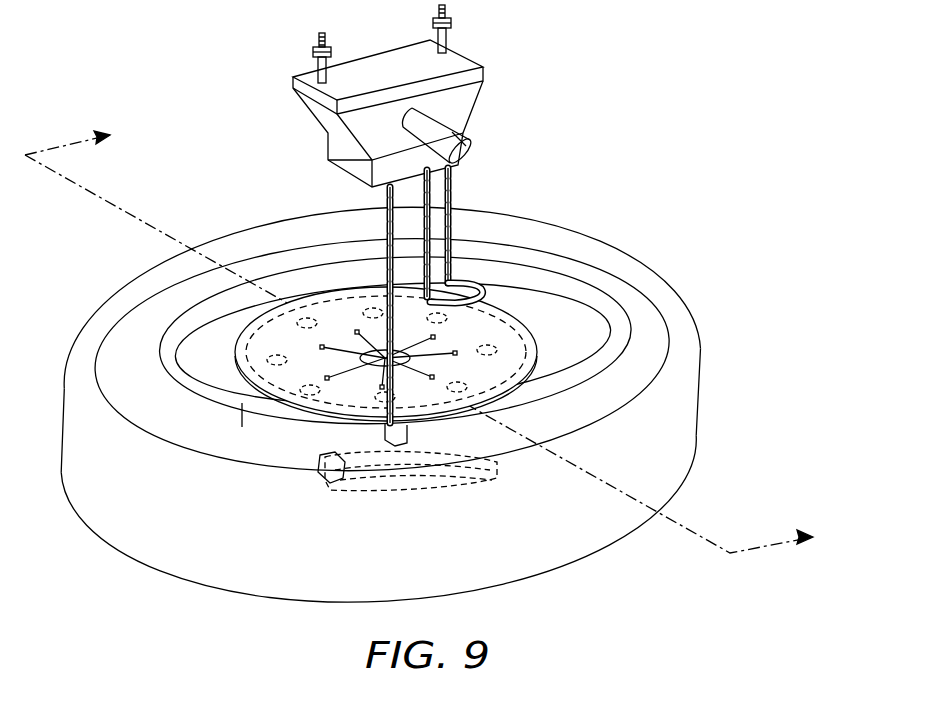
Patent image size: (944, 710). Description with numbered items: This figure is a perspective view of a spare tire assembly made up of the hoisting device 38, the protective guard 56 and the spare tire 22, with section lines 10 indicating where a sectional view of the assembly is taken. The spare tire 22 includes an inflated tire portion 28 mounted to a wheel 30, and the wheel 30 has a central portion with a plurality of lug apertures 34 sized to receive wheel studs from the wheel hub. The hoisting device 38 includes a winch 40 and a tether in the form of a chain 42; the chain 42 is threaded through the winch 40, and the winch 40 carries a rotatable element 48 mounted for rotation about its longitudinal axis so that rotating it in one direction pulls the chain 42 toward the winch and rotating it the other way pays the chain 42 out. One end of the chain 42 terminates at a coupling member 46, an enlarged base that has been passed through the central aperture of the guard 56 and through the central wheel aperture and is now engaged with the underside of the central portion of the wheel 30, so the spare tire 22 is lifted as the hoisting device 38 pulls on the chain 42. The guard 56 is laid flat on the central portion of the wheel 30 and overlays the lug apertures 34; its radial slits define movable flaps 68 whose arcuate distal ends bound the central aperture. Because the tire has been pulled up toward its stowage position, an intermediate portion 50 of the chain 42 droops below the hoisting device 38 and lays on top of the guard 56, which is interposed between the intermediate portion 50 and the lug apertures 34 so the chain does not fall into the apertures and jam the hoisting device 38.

The section lines 10 is at (435, 335).
The spare tire 22 is at (422, 390).
The inflated tire portion 28 is at (683, 438).
The wheel 30 is at (590, 382).
The lug apertures 34 is at (267, 358).
The hoisting device 38 is at (376, 96).
The winch 40 is at (313, 117).
The chain 42 is at (383, 187).
The coupling member 46 is at (340, 480).
The rotatable element 48 is at (468, 143).
The intermediate portion of chain 50 is at (453, 187).
The protective guard 56 is at (235, 355).
The flaps 68 is at (345, 348).